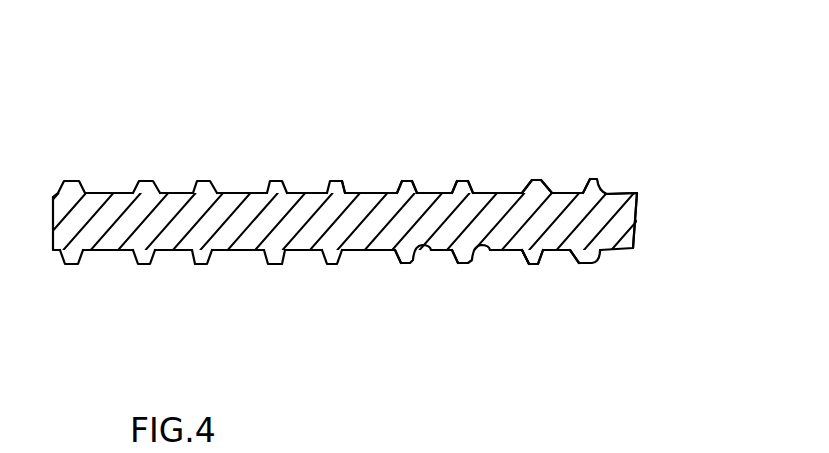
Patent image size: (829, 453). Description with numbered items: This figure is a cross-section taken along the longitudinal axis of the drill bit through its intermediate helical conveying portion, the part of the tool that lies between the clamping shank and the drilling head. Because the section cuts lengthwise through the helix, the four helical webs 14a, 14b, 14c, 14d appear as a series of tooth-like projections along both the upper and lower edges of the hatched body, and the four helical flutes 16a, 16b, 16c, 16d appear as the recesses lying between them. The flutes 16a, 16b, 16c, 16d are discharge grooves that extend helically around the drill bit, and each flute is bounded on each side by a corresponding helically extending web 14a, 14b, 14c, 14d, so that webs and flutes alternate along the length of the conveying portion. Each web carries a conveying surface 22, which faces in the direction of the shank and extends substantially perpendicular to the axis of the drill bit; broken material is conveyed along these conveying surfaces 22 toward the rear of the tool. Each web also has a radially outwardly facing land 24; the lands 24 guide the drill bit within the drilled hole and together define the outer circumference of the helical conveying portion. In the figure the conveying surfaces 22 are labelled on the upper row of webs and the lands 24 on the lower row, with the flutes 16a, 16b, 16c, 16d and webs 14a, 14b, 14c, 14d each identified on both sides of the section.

The conveying surface 22 is at (268, 186).
The land 24 is at (145, 266).
The helical web 14a is at (433, 253).
The helical web 14b is at (634, 194).
The helical web 14c is at (402, 182).
The helical web 14d is at (465, 182).
The helical flute 16a is at (567, 192).
The helical flute 16b is at (368, 190).
The helical flute 16c is at (432, 192).
The helical flute 16d is at (507, 193).